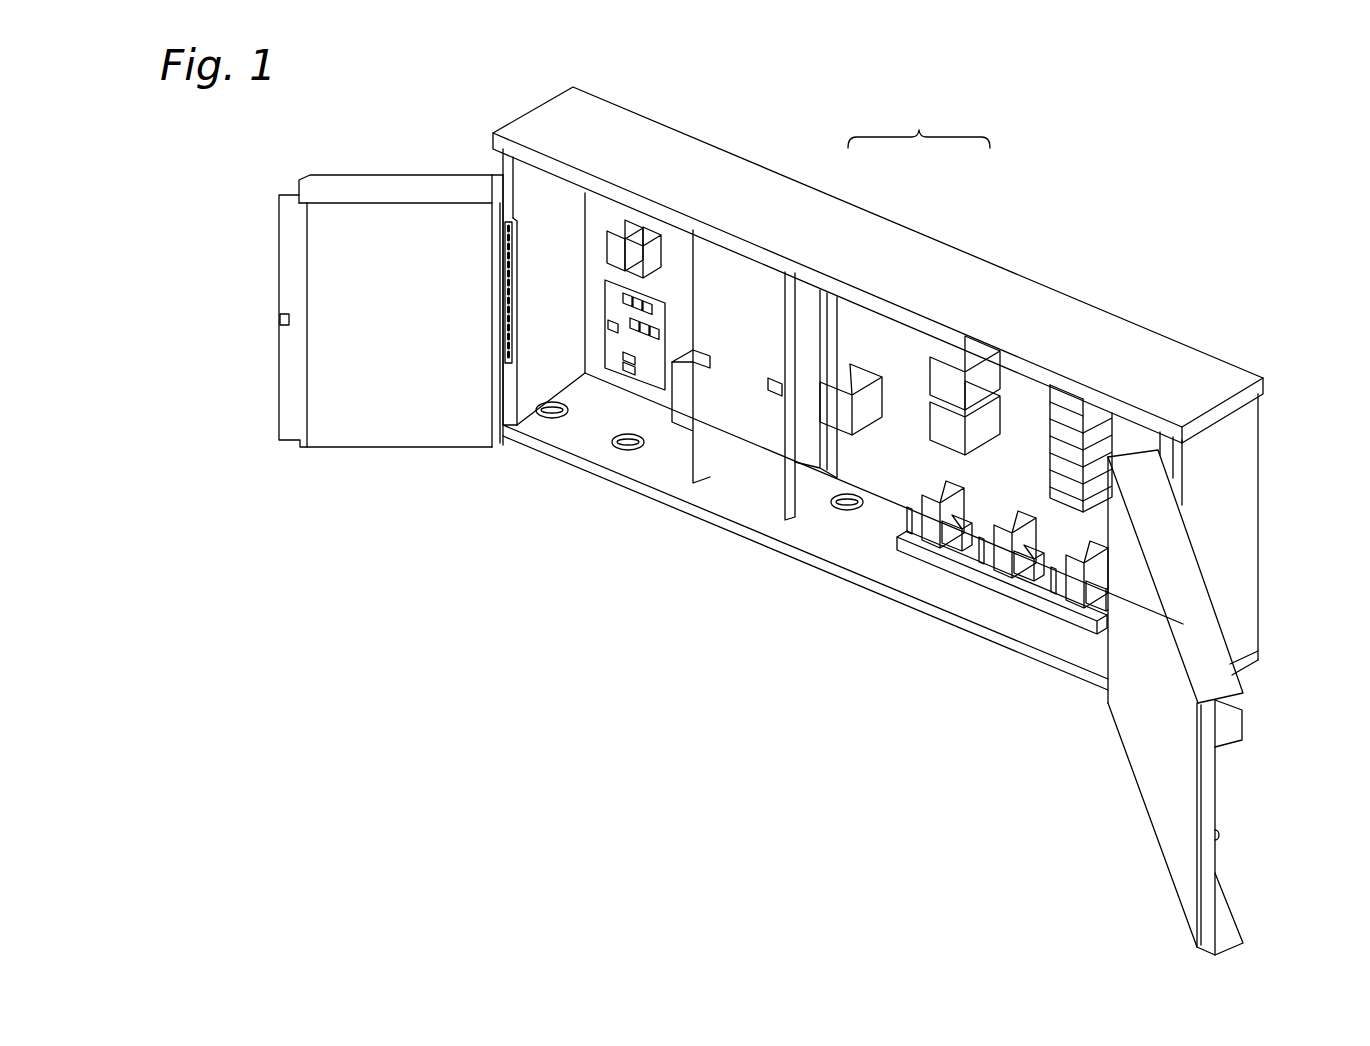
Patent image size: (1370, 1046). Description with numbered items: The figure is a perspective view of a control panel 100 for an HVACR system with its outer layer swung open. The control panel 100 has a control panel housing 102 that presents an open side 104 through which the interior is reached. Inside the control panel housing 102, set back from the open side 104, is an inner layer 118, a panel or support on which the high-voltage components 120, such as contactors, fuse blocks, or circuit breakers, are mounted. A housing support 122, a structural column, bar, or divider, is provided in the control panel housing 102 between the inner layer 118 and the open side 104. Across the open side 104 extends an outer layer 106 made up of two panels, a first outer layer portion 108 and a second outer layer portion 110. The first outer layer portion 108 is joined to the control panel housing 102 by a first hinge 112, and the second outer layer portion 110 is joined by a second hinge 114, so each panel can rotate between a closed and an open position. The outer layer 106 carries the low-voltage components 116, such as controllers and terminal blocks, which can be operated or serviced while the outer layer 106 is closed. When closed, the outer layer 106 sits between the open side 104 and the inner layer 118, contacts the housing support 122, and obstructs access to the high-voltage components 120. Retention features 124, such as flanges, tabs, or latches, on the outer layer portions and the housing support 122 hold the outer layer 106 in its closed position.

The control panel 100 is at (1180, 230).
The control panel housing 102 is at (1258, 458).
The open side 104 is at (766, 568).
The outer layer 106 is at (919, 130).
The first outer layer portion 108 is at (458, 190).
The second outer layer portion 110 is at (1140, 480).
The first hinge 112 is at (506, 357).
The second hinge 114 is at (1165, 450).
The low-voltage components 116 is at (1245, 725).
The inner layer 118 is at (847, 514).
The high-voltage components 120 is at (647, 363).
The housing support 122 is at (710, 457).
The retention features 124 is at (281, 320).